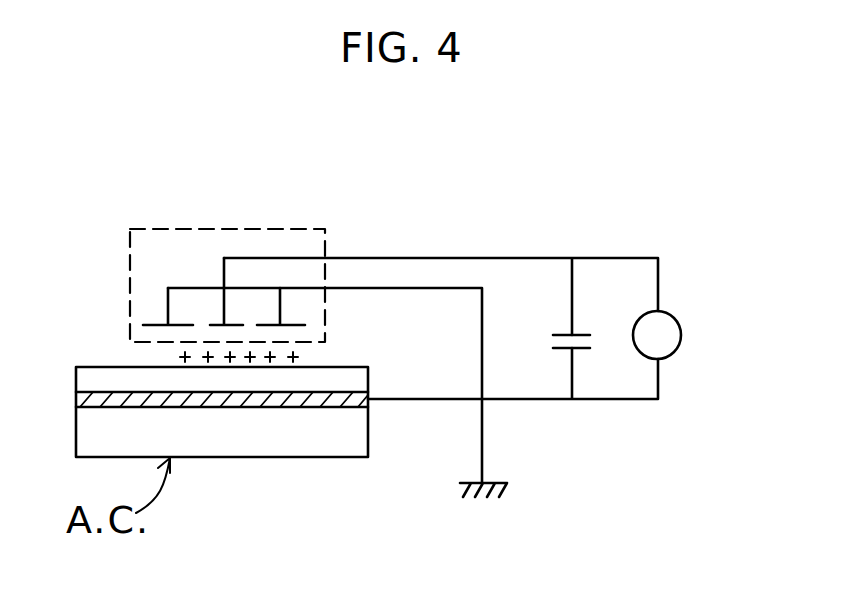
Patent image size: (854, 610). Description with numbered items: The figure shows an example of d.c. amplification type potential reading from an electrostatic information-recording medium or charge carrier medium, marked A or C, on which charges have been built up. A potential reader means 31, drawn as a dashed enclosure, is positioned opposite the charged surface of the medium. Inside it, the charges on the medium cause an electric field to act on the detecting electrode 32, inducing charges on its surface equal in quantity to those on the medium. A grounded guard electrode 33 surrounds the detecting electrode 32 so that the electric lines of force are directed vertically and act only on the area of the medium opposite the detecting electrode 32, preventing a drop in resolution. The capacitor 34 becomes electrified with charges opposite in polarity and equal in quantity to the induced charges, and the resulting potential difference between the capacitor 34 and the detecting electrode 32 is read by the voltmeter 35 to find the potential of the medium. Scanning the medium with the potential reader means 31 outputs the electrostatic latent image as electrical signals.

The potential reader means 31 is at (247, 229).
The detecting electrode 32 is at (222, 323).
The guard electrode 33 is at (292, 318).
The capacitor 34 is at (590, 342).
The voltmeter 35 is at (683, 333).